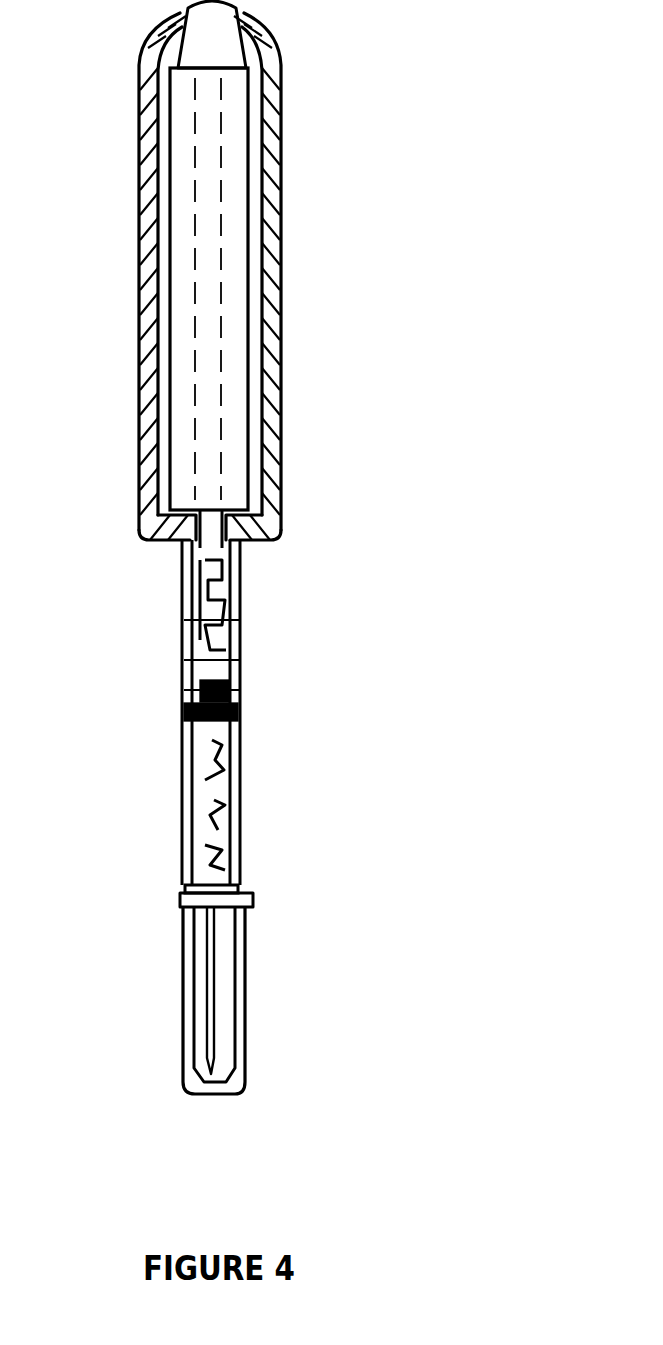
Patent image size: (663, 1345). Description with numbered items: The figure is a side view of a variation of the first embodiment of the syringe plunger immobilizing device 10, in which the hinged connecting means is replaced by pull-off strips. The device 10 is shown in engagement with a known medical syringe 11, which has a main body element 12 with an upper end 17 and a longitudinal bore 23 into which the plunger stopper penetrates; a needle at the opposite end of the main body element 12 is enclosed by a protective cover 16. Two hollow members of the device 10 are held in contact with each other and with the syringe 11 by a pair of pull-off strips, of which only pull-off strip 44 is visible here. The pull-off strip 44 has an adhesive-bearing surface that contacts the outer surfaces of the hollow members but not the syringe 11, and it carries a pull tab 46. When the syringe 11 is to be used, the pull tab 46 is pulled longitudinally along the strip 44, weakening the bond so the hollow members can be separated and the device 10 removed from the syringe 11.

The syringe plunger immobilizing device 10 is at (300, 246).
The pull tab 46 is at (232, 45).
The pull-off strip 44 is at (234, 323).
The upper end 17 is at (176, 573).
The medical syringe 11 is at (246, 723).
The main body element 12 is at (195, 763).
The longitudinal bore 23 is at (222, 790).
The protective cover 16 is at (236, 970).